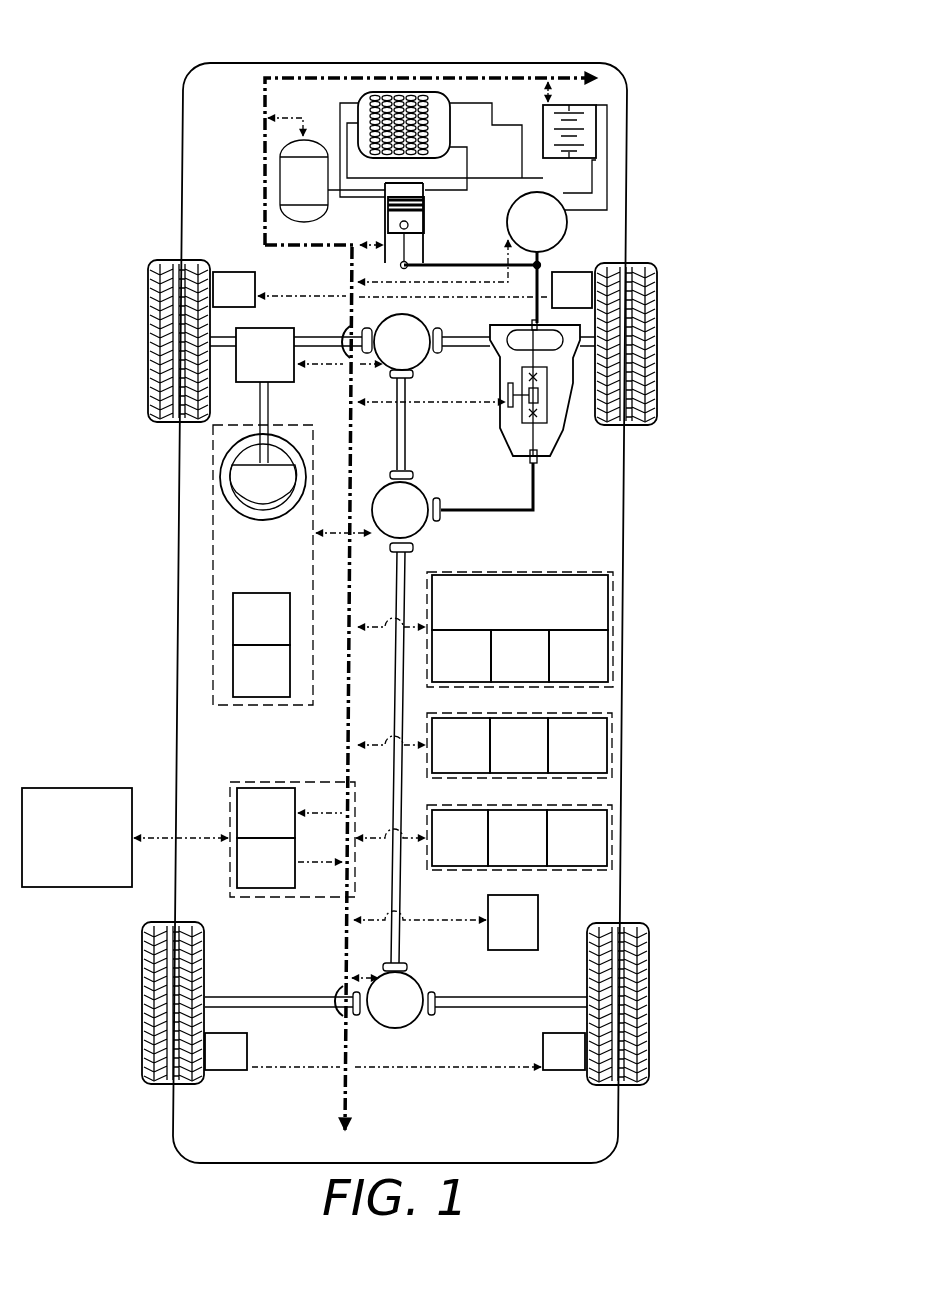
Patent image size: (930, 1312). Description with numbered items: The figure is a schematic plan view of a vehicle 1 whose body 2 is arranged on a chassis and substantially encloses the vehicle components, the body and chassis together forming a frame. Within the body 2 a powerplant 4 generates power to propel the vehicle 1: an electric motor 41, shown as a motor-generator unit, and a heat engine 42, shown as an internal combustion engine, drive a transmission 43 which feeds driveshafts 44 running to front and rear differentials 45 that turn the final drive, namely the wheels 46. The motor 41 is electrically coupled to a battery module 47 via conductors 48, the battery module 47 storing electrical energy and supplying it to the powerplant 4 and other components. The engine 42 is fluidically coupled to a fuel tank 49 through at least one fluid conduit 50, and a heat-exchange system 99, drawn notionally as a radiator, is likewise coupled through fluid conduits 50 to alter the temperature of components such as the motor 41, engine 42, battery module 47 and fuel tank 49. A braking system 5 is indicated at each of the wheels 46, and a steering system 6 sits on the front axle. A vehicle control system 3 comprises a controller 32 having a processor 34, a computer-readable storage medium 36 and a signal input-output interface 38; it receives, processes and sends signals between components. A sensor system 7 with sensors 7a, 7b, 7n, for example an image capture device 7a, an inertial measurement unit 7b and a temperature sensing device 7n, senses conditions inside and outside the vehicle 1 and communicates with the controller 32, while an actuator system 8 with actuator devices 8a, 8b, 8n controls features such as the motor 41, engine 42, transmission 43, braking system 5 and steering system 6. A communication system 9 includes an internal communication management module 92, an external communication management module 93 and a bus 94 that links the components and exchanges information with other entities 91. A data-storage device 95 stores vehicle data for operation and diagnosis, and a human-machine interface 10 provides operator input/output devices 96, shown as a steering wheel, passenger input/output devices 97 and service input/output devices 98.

The vehicle 1 is at (674, 52).
The body 2 is at (212, 63).
The vehicle control system 3 is at (570, 629).
The powerplant 4 is at (402, 163).
The braking system 5 is at (226, 303).
The steering system 6 is at (254, 368).
The sensor system 7 is at (570, 745).
The image capture device 7a is at (446, 758).
The inertial measurement unit 7b is at (505, 758).
The temperature sensing device 7n is at (563, 758).
The actuator system 8 is at (570, 837).
The actuator device 8a is at (445, 850).
The actuator device 8b is at (502, 850).
The actuator device 8n is at (561, 850).
The communication system 9 is at (219, 817).
The human-machine interface 10 is at (195, 543).
The controller 32 is at (505, 617).
The processor 34 is at (446, 669).
The computer-readable storage medium 36 is at (505, 669).
The signal input-output interface 38 is at (564, 669).
The motor 41 is at (567, 228).
The engine 42 is at (425, 202).
The transmission 43 is at (558, 443).
The driveshafts 44 is at (407, 567).
The differentials 45 is at (420, 1018).
The wheels 46 is at (150, 340).
The battery module 47 is at (572, 92).
The conductors 48 is at (593, 193).
The fuel tank 49 is at (282, 192).
The fluid conduit 50 is at (500, 120).
The other entities 91 is at (62, 847).
The internal communication management module 92 is at (251, 826).
The external communication management module 93 is at (251, 876).
The bus 94 is at (348, 733).
The data-storage device 95 is at (498, 936).
The operator input/output device 96 is at (243, 520).
The passenger input/output device 97 is at (247, 632).
The service input/output device 98 is at (247, 684).
The heat-exchange system 99 is at (385, 92).